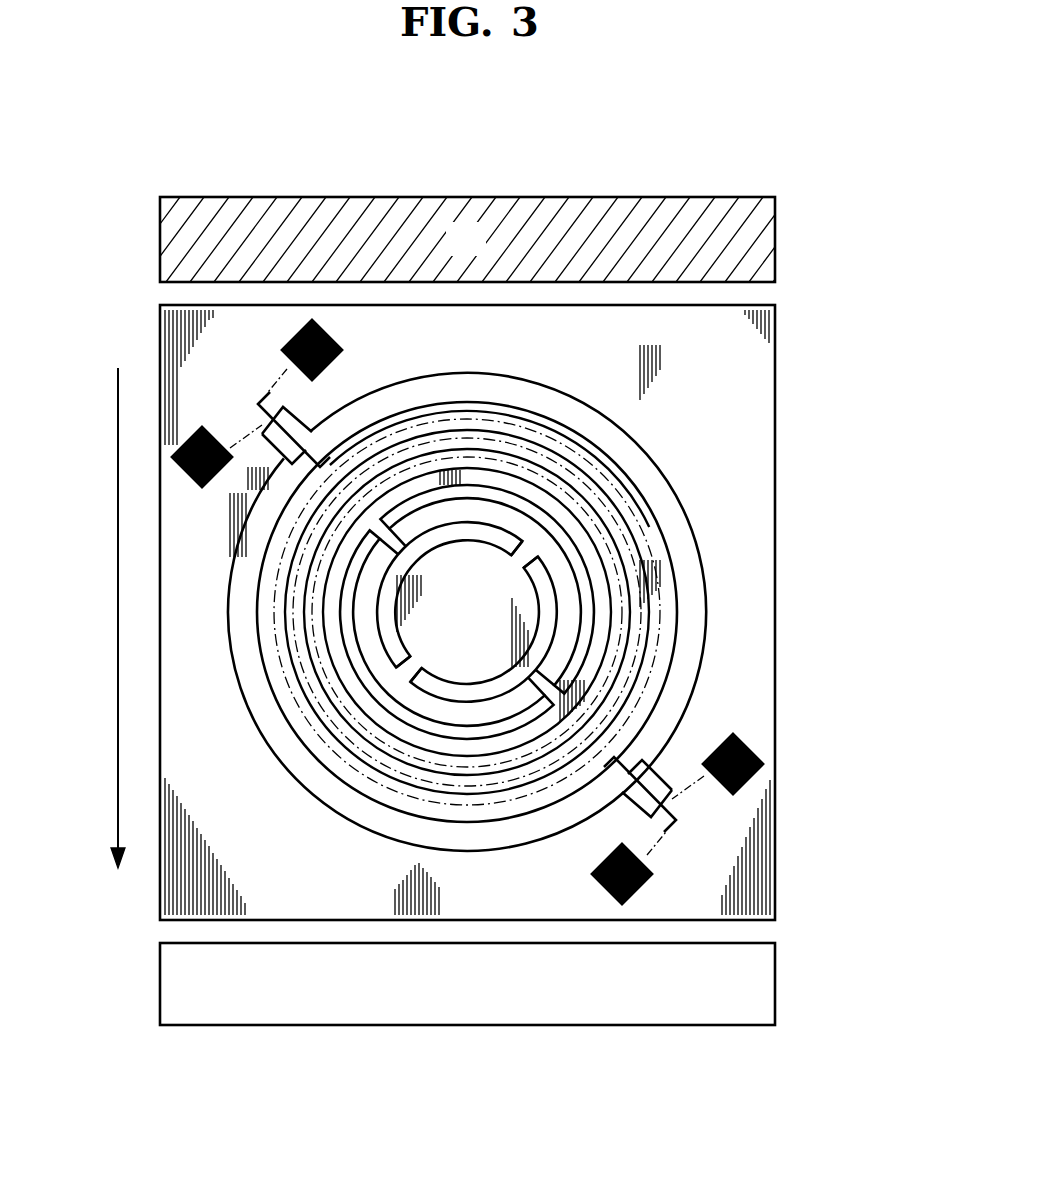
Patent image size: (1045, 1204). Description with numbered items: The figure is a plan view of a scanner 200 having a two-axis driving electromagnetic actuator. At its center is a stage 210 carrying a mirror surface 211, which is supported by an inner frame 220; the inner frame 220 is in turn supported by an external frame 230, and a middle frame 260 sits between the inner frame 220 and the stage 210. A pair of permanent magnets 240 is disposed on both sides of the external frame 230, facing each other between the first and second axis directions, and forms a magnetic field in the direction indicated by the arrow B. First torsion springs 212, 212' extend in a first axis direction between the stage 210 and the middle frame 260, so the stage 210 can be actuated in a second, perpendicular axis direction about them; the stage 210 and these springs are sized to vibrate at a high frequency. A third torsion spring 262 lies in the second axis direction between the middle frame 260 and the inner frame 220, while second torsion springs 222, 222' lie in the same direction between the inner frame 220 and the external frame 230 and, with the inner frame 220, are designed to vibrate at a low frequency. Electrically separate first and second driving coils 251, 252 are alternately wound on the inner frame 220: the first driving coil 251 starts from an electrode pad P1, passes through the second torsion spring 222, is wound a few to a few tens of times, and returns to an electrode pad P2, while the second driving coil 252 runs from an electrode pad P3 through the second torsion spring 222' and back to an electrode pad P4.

The scanner 200 is at (108, 203).
The permanent magnets 240 is at (760, 232).
The external frame 230 is at (757, 410).
The inner frame 220 is at (646, 490).
The first driving coil 251 is at (430, 418).
The second driving coil 252 is at (515, 425).
The second torsion spring 222 is at (222, 403).
The second torsion spring 222' is at (724, 788).
The stage 210 is at (471, 612).
The mirror surface 211 is at (540, 617).
The first torsion spring 212 is at (681, 554).
The first torsion spring 212' is at (225, 686).
The middle frame 260 is at (567, 547).
The third torsion spring 262 is at (557, 685).
The electrode pad P1 is at (290, 342).
The electrode pad P2 is at (181, 450).
The electrode pad P3 is at (768, 755).
The electrode pad P4 is at (650, 878).
The arrow indicating magnetic field direction B is at (102, 618).